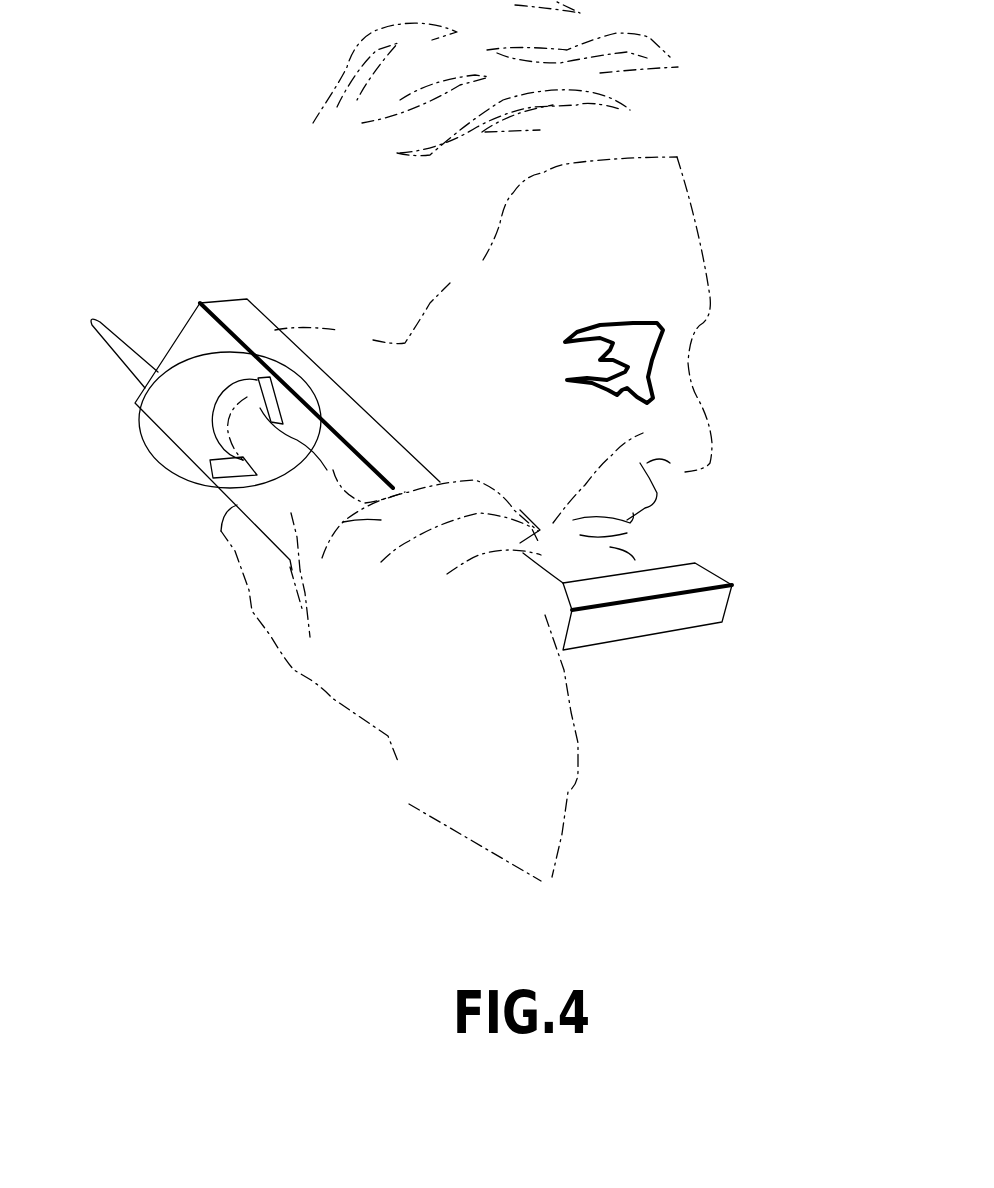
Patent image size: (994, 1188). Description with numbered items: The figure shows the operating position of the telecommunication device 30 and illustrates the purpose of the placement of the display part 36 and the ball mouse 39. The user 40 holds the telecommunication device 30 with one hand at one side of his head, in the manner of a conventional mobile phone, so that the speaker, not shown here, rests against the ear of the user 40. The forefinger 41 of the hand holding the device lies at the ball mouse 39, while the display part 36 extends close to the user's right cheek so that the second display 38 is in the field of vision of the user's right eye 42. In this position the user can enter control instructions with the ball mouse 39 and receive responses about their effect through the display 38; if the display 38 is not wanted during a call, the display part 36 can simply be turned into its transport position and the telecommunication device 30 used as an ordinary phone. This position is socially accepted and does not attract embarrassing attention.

The telecommunication device 30 is at (122, 528).
The display part 36 is at (705, 607).
The second display 38 is at (673, 560).
The ball mouse 39 is at (143, 445).
The user 40 is at (742, 243).
The forefinger 41 is at (262, 447).
The right eye 42 is at (647, 360).